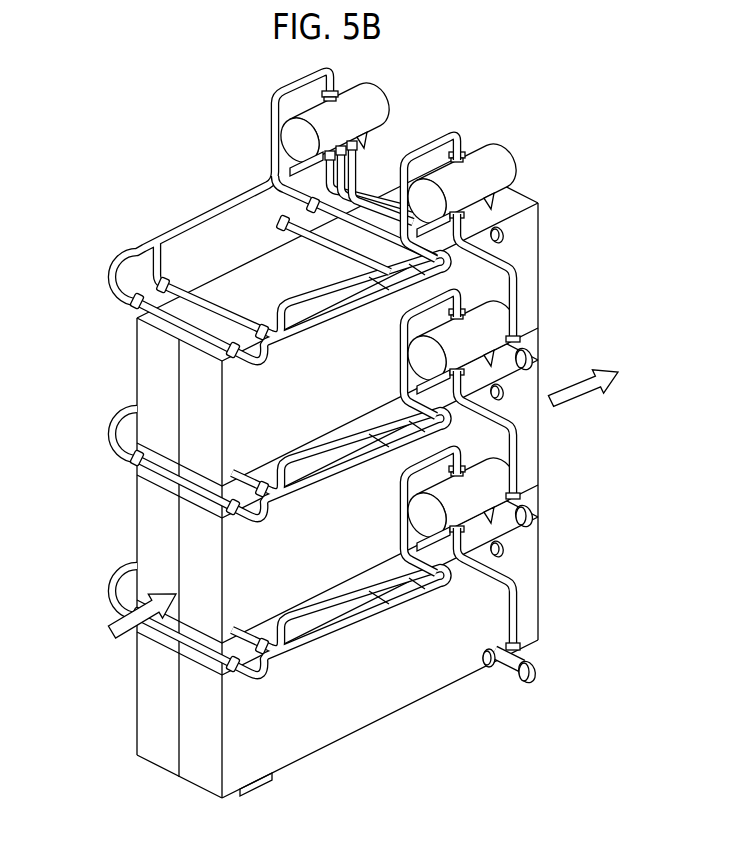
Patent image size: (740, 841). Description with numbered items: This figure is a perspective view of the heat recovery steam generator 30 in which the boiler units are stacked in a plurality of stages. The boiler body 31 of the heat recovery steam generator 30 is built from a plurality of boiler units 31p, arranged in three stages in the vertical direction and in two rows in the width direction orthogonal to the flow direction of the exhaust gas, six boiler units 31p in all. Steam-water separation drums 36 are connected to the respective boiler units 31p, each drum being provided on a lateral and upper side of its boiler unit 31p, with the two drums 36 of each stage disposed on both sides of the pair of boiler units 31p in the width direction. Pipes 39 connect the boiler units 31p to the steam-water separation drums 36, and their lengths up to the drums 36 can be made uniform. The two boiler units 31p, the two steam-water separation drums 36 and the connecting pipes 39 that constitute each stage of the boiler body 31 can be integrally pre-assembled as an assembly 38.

The heat recovery steam generator 30 is at (404, 479).
The boiler body 31 is at (540, 573).
The boiler unit 31p is at (187, 398).
The steam-water separation drum 36 is at (372, 104).
The assembly 38 is at (137, 331).
The pipe 39 is at (190, 222).